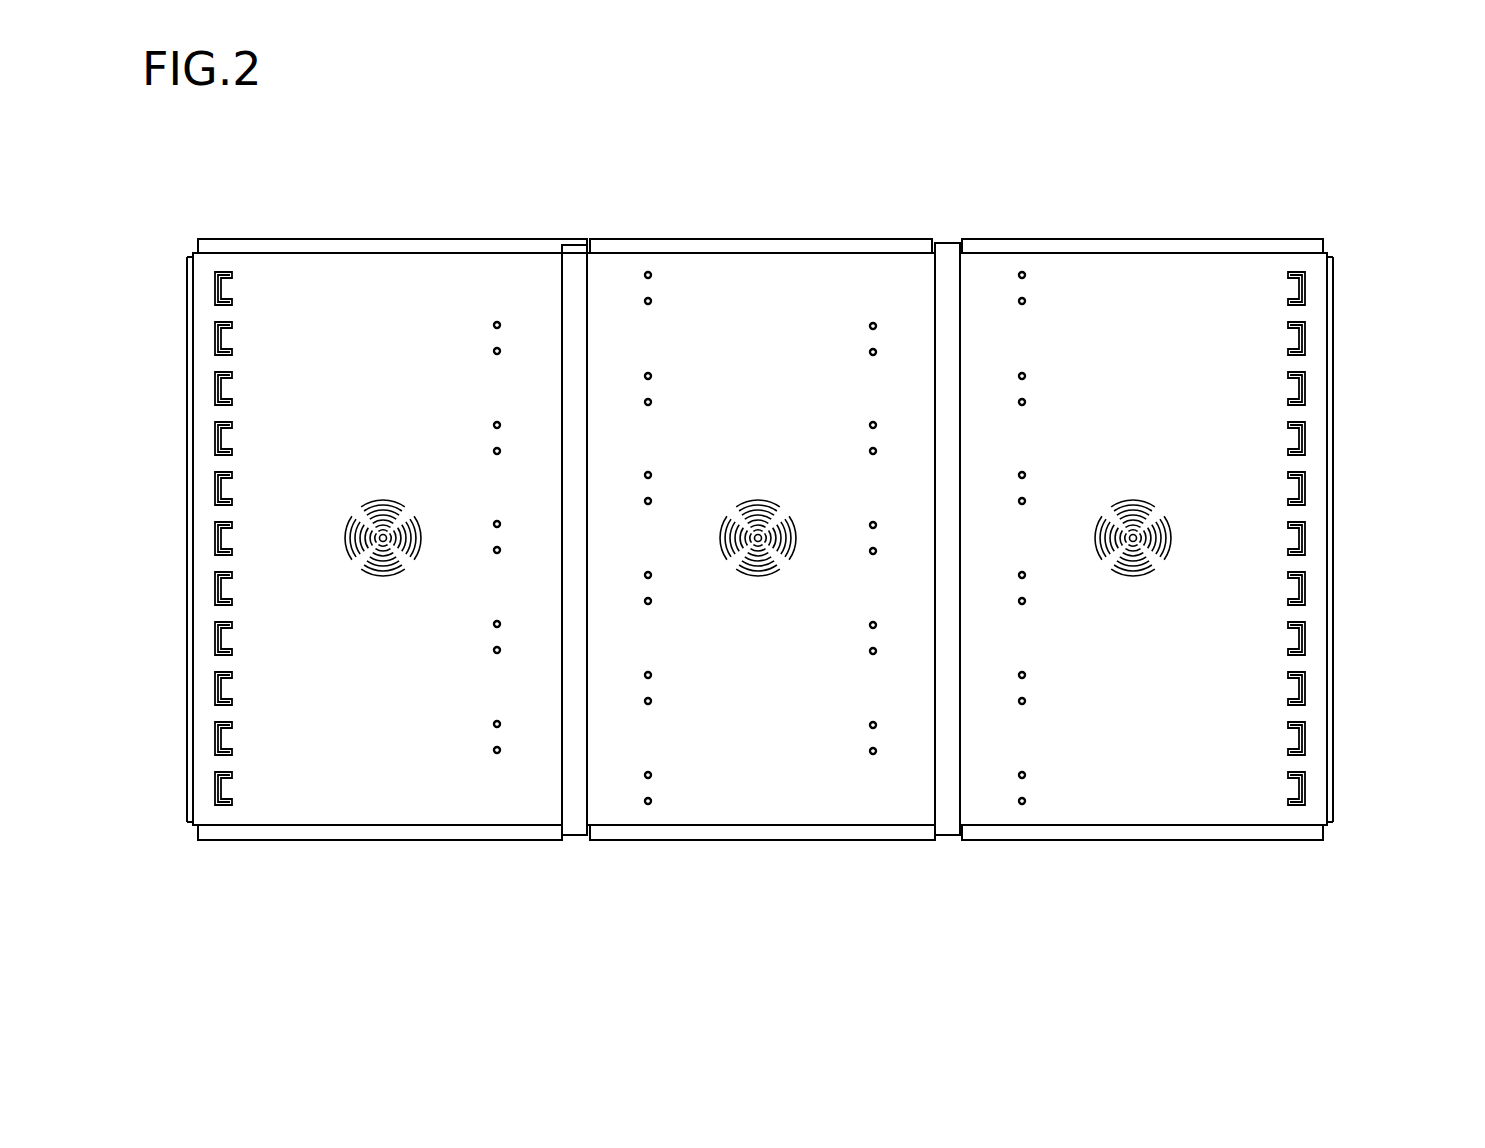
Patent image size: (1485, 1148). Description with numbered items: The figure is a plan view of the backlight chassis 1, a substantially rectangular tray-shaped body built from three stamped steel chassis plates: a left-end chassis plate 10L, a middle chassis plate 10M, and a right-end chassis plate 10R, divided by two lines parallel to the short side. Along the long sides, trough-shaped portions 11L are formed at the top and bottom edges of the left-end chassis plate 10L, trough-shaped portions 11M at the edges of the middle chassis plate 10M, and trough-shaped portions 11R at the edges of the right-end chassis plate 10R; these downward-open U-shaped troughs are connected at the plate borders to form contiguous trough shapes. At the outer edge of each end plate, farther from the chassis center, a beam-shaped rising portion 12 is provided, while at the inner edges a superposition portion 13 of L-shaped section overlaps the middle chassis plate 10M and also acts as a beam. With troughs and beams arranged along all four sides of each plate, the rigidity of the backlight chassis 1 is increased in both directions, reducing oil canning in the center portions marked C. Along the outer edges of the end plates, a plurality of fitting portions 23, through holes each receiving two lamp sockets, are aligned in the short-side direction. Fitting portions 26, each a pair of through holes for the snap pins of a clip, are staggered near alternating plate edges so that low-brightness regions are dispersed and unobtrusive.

The backlight chassis 1 is at (195, 218).
The trough-shaped portion 11L is at (383, 248).
The trough-shaped portion 11M is at (762, 248).
The trough-shaped portion 11R is at (1133, 248).
The left-end chassis plate 10L is at (410, 456).
The middle chassis plate 10M is at (792, 456).
The right-end chassis plate 10R is at (1165, 456).
The rising portion 12 is at (1335, 390).
The superposition portion 13 is at (575, 761).
The fitting portion 23 is at (232, 342).
The fitting portion 26 is at (492, 324).
The center portion C is at (385, 577).